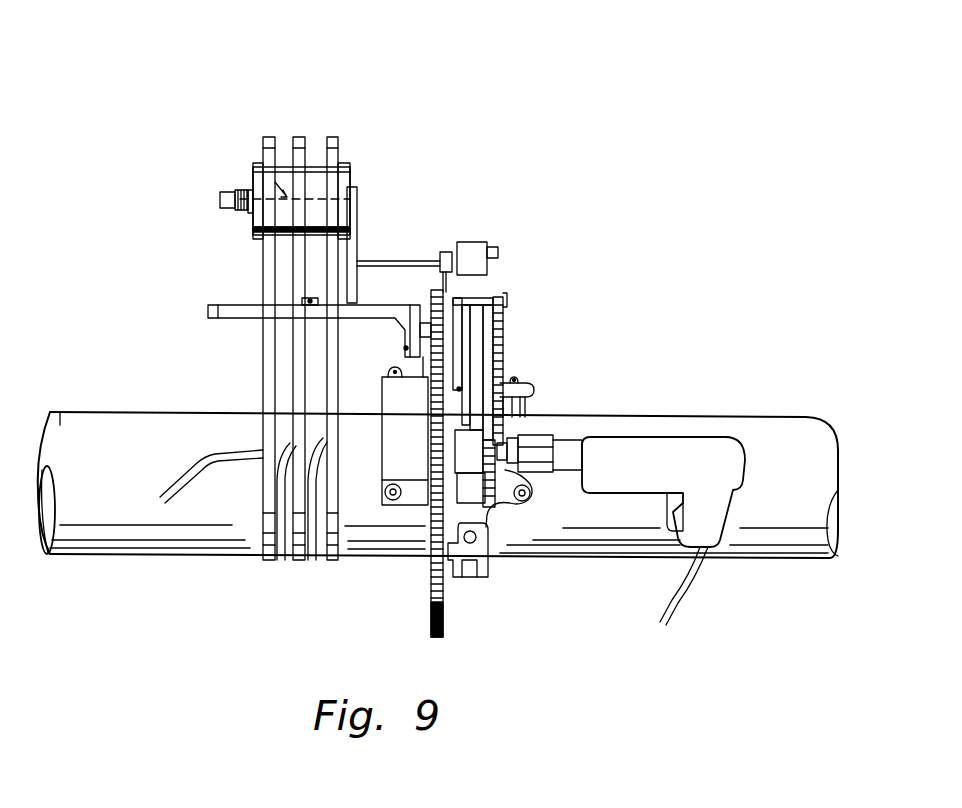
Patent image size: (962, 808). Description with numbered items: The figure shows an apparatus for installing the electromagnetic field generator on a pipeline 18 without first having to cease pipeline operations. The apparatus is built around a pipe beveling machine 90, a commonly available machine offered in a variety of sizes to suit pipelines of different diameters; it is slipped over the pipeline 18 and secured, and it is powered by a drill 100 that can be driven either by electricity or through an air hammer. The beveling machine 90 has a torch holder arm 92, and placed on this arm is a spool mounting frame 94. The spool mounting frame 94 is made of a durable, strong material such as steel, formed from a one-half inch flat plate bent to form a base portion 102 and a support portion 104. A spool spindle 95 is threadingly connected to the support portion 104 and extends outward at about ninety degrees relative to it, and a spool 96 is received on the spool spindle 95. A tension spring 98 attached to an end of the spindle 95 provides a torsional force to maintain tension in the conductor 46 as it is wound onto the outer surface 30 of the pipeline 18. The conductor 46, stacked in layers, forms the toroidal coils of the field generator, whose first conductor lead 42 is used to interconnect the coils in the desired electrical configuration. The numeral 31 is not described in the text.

The pipeline 18 is at (60, 428).
The outer surface 30 is at (105, 457).
The conduit end 31 is at (50, 534).
The first conductor lead 42 is at (168, 494).
The conductor 46 is at (268, 137).
The pipe beveling machine 90 is at (518, 337).
The torch holder arm 92 is at (208, 310).
The spool mounting frame 94 is at (358, 215).
The spool spindle 95 is at (251, 168).
The spool 96 is at (349, 180).
The tension spring 98 is at (237, 212).
The drill 100 is at (712, 527).
The base portion 102 is at (313, 302).
The support portion 104 is at (352, 242).